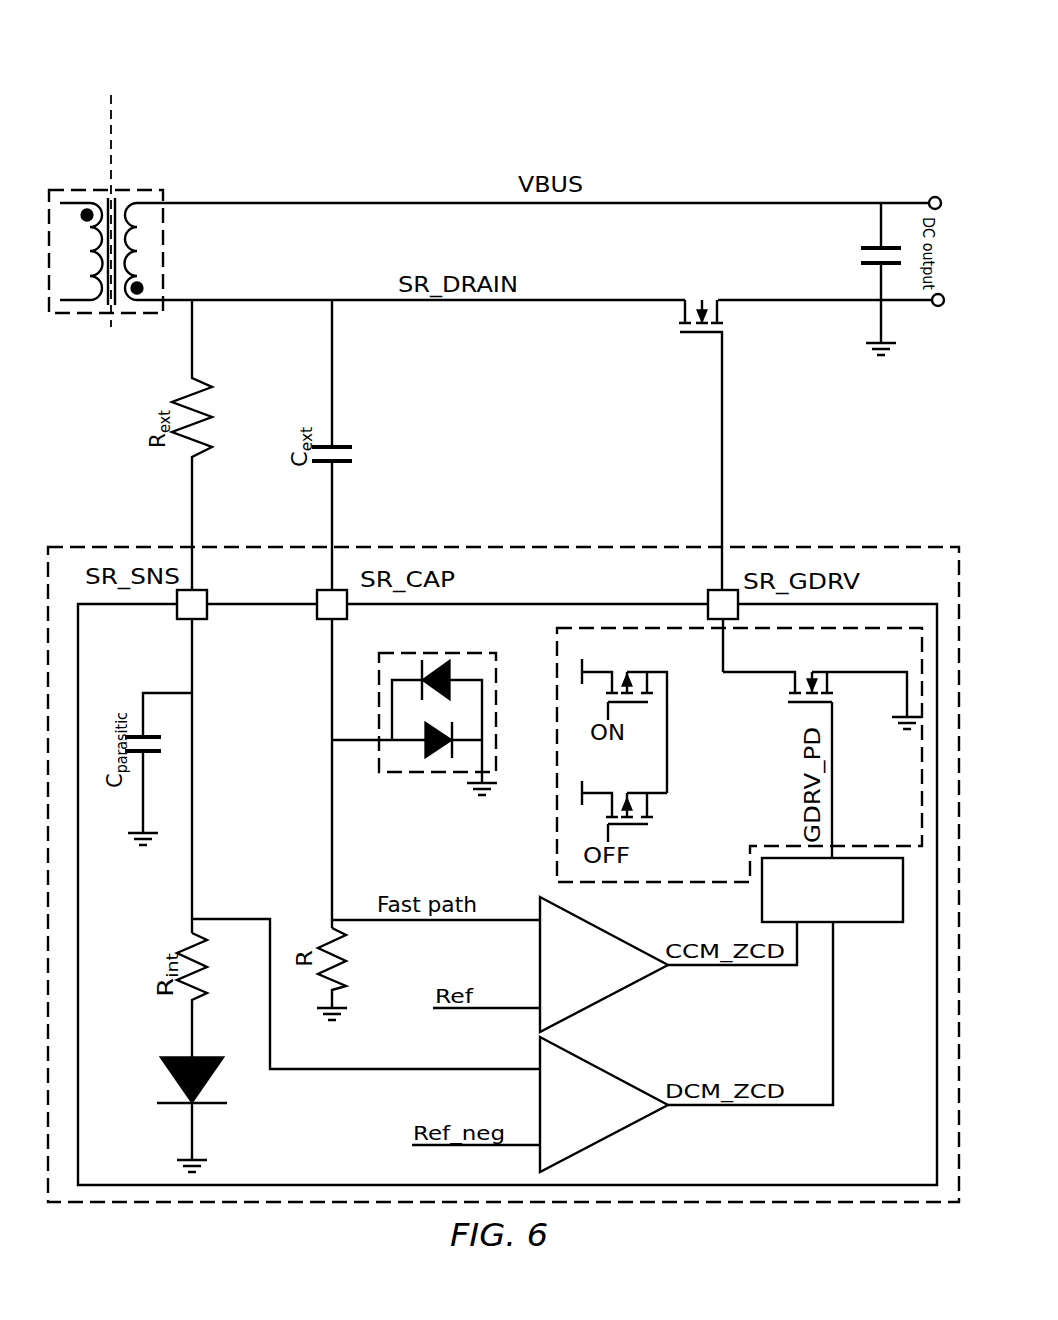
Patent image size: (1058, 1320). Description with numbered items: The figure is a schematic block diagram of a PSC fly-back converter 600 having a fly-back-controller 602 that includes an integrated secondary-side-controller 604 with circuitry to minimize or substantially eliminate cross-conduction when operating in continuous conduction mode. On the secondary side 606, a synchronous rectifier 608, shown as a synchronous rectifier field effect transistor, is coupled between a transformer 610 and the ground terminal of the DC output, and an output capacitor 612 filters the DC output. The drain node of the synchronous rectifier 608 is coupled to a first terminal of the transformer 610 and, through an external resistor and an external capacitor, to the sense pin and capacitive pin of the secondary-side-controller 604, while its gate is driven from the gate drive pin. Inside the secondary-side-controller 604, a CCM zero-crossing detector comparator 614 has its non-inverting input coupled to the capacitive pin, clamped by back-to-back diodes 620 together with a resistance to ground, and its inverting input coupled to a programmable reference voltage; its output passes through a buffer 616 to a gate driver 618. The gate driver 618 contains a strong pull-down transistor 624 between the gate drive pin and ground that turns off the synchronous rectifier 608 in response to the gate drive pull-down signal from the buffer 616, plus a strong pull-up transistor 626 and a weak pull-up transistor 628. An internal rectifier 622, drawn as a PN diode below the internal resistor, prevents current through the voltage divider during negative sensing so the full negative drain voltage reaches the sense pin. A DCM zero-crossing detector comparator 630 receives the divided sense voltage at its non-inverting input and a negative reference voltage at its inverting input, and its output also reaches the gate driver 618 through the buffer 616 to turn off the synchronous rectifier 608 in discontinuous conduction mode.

The PSC fly-back converter 600 is at (75, 25).
The fly-back-controller 602 is at (908, 581).
The integrated secondary-side-controller 604 is at (133, 646).
The secondary side 606 is at (167, 116).
The synchronous rectifier 608 is at (697, 290).
The transformer 610 is at (70, 188).
The output capacitor 612 is at (861, 260).
The CCM zero-crossing detector comparator 614 is at (608, 976).
The buffer 616 is at (852, 909).
The gate driver 618 is at (755, 766).
The back-to-back diodes 620 is at (438, 652).
The internal rectifier 622 is at (163, 1058).
The pull-down transistor 624 is at (801, 656).
The strong pull-up transistor 626 is at (636, 783).
The weak pull-up transistor 628 is at (633, 656).
The DCM zero-crossing detector comparator 630 is at (617, 1119).